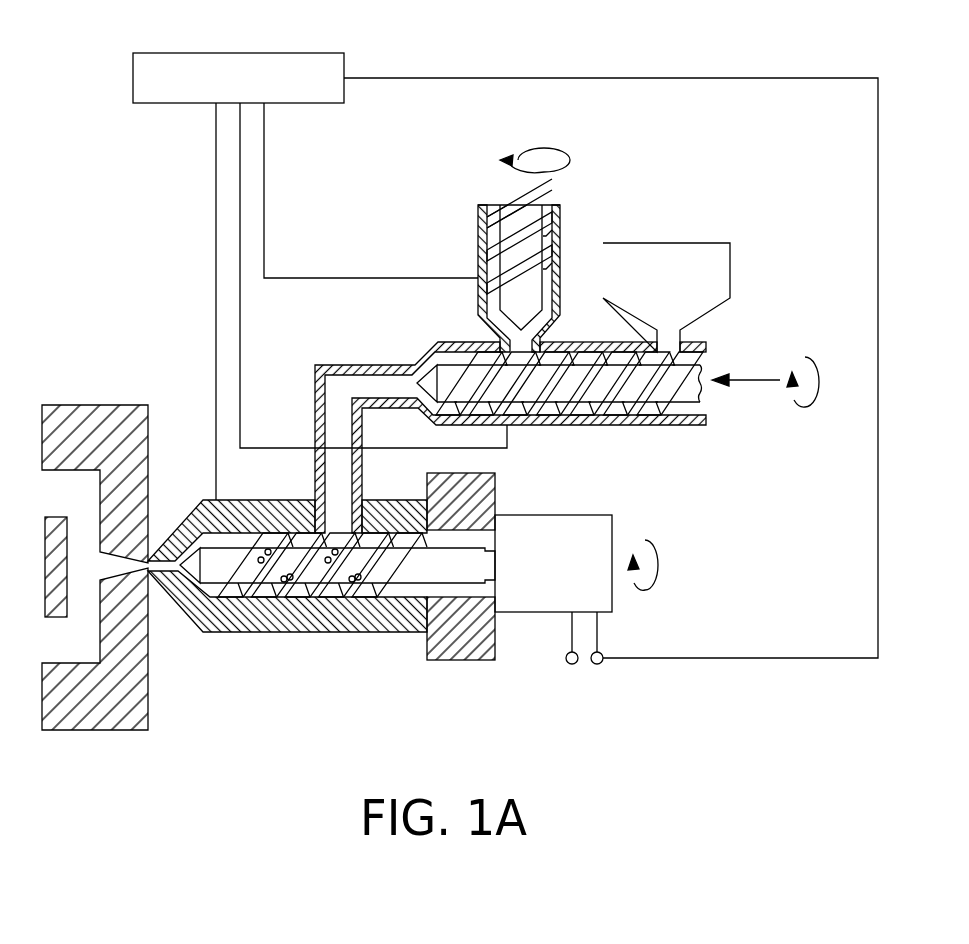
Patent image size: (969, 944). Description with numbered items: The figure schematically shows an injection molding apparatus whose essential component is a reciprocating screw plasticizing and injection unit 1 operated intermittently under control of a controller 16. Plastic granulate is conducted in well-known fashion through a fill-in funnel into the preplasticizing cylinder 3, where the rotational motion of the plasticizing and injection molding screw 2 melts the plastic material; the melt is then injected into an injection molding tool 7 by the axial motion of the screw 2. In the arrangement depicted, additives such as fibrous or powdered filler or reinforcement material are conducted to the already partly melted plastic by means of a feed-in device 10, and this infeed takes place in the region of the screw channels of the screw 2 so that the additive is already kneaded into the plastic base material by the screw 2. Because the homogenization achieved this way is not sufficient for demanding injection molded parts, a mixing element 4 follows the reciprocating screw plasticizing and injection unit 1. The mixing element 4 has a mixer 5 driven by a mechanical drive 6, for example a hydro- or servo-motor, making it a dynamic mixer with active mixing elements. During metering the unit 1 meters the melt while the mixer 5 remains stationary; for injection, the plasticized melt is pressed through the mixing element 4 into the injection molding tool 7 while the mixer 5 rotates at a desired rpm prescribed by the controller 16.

The reciprocating screw plasticizing and injection unit 1 is at (594, 330).
The plasticizing and injection molding screw 2 is at (555, 397).
The preplasticizing cylinder 3 is at (445, 343).
The mixing element 4 is at (338, 622).
The mixer 5 is at (280, 583).
The mechanical drive 6 is at (543, 605).
The injection molding tool 7 is at (105, 412).
The feed-in device 10 is at (515, 293).
The controller 16 is at (290, 52).